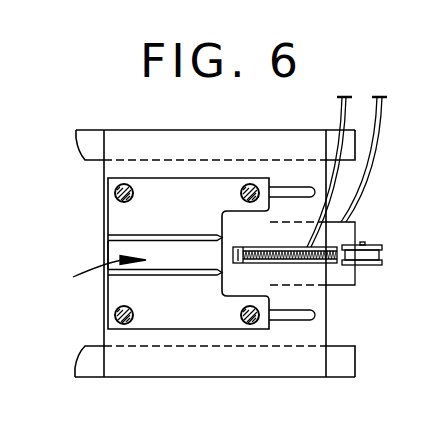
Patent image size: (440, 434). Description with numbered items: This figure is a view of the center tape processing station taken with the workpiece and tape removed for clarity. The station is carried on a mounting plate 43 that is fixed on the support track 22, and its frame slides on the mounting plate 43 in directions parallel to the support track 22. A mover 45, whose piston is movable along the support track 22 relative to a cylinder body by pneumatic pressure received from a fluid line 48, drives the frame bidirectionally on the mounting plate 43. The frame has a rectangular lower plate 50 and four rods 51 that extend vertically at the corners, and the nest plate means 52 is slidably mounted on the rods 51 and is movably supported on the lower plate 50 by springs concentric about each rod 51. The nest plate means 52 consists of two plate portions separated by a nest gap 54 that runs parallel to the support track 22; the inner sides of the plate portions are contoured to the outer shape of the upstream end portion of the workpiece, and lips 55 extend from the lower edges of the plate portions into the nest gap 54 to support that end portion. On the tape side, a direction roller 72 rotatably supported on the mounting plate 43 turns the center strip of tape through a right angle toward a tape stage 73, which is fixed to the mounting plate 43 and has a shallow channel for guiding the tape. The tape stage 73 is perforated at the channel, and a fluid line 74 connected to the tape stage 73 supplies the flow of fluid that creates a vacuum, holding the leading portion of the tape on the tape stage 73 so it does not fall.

The support track 22 is at (0, 9).
The mounting plate 43 is at (172, 138).
The mover 45 is at (361, 292).
The fluid line 48 is at (383, 117).
The lower plate 50 is at (113, 242).
The rods 51 is at (240, 201).
The nest plate means 52 is at (107, 208).
The nest gap 54 is at (94, 273).
The lips 55 is at (183, 237).
The direction roller 72 is at (373, 265).
The tape stage 73 is at (228, 253).
The fluid line 74 is at (344, 112).